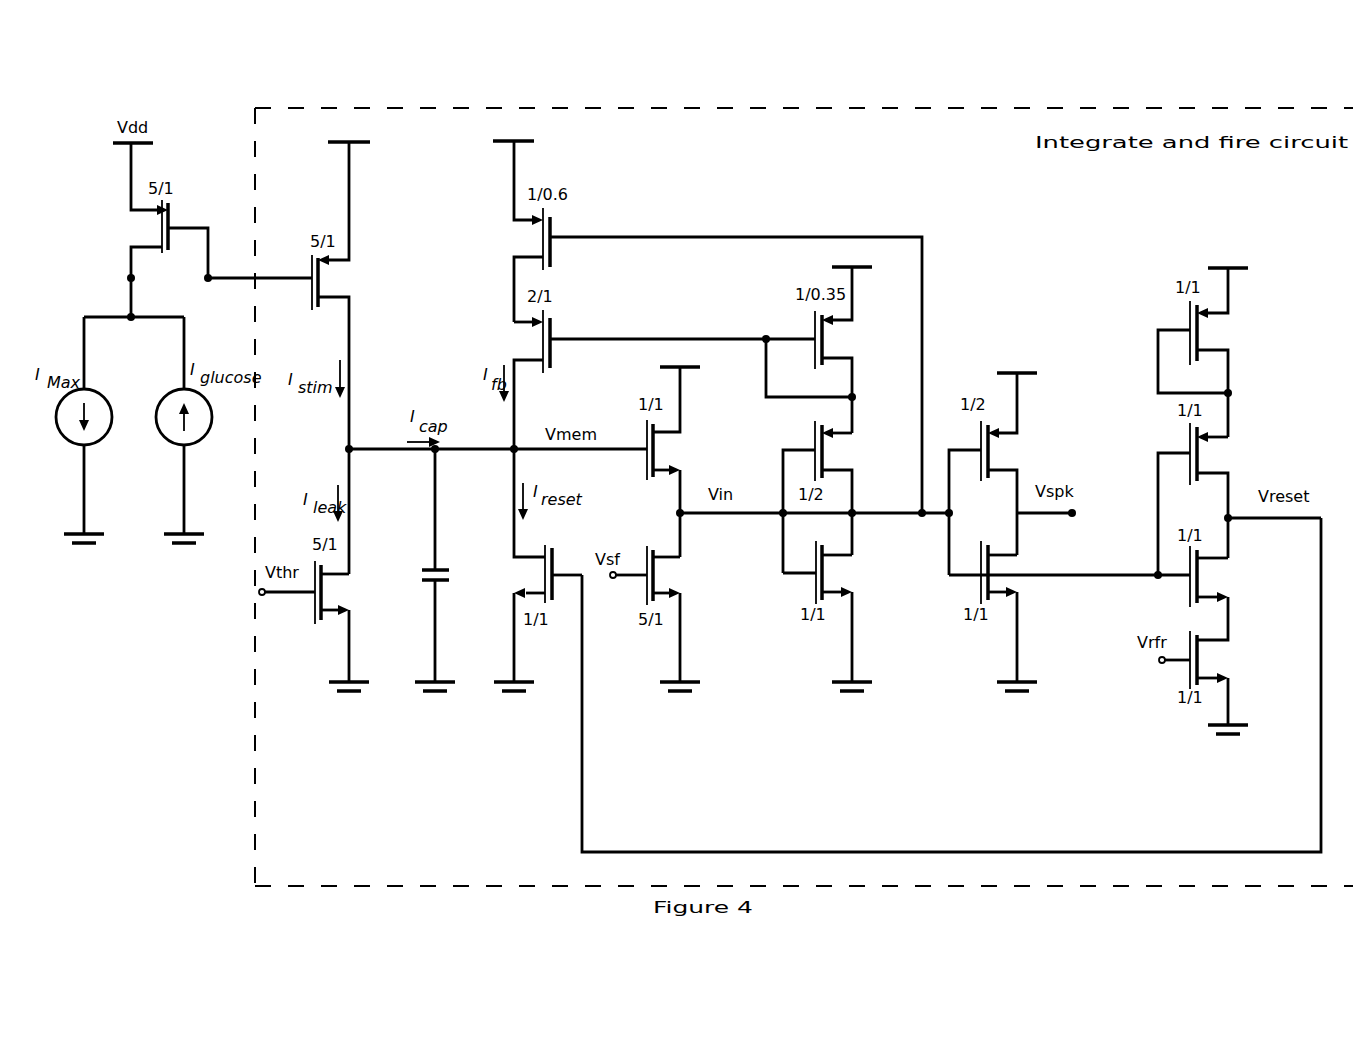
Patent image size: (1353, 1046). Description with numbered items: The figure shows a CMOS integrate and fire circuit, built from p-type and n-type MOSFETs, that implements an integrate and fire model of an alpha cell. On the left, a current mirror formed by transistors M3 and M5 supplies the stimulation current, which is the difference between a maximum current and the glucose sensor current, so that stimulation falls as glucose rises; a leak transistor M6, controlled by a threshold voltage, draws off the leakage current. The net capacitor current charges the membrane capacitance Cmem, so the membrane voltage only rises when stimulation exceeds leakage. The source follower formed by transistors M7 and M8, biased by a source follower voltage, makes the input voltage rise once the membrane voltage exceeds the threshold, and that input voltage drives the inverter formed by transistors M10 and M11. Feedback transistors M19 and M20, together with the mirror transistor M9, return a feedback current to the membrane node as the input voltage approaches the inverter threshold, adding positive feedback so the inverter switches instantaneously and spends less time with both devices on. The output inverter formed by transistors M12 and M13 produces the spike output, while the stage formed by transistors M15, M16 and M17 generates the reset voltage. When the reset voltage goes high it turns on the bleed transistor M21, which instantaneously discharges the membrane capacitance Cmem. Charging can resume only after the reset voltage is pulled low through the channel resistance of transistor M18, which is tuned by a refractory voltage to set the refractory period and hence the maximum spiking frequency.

The PMOS current mirror input transistor M3 is at (154, 230).
The PMOS current mirror output transistor supplying stimulus current M5 is at (291, 295).
The NMOS leak transistor controlled by Vthr M6 is at (316, 626).
The source follower transistor M7 is at (679, 462).
The source follower transistor M8 is at (660, 618).
The PMOS feedback mirror transistor M9 is at (819, 350).
The inverter transistor M10 is at (835, 497).
The inverter transistor M11 is at (835, 616).
The PMOS output inverter transistor M12 is at (1012, 474).
The NMOS output inverter transistor M13 is at (1069, 616).
The PMOS diode-connected load transistor M15 is at (1214, 352).
The PMOS reset inverter transistor M16 is at (1239, 499).
The NMOS reset inverter transistor M17 is at (1230, 593).
The transistor M18 is at (1215, 682).
The PMOS feedback transistor M19 is at (704, 327).
The PMOS feedback current transistor M20 is at (651, 379).
The bleed transistor M21 is at (534, 570).
The membrane capacitance Cmem is at (421, 570).